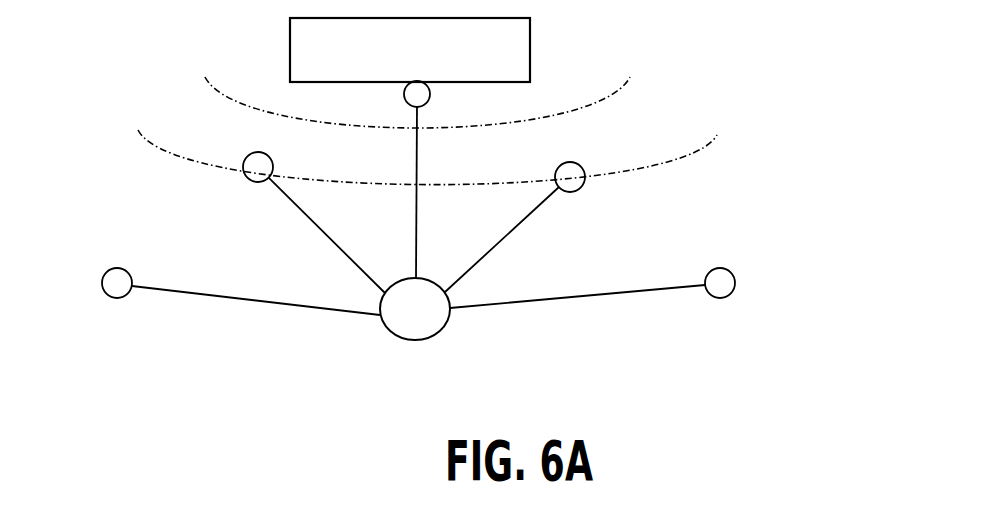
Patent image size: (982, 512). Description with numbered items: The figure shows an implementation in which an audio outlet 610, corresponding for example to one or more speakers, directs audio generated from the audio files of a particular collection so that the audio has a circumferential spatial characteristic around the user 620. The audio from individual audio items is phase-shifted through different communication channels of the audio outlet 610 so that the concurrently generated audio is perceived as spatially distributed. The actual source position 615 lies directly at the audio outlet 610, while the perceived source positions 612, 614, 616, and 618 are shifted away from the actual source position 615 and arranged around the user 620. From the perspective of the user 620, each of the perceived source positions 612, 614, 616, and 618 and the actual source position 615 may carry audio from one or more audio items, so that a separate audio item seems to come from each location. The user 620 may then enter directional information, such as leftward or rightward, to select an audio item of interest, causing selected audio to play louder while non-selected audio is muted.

The audio outlet 610 is at (410, 50).
The perceived source position 612 is at (104, 270).
The perceived source position 614 is at (256, 152).
The actual source position 615 is at (428, 101).
The perceived source position 616 is at (578, 163).
The perceived source position 618 is at (728, 270).
The user 620 is at (437, 322).